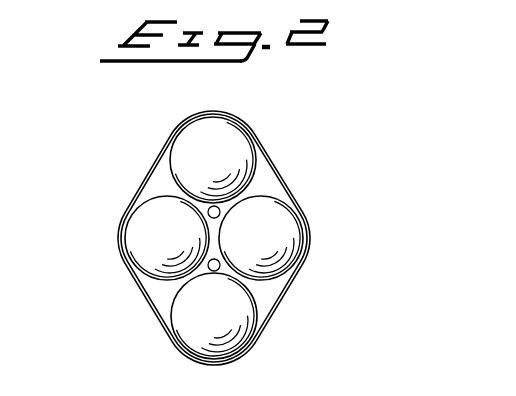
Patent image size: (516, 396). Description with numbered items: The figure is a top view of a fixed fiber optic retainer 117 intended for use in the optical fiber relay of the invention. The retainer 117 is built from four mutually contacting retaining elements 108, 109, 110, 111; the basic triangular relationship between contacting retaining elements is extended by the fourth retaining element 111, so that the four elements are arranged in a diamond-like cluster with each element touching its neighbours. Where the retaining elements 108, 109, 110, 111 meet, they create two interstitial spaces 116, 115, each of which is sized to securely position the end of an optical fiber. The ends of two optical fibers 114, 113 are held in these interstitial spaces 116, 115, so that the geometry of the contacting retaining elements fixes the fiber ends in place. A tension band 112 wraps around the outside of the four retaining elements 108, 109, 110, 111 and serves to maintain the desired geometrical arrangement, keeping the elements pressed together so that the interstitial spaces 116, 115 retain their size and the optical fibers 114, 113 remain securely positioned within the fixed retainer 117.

The retaining element 108 is at (185, 147).
The retaining element 109 is at (146, 243).
The retaining element 110 is at (203, 335).
The retaining element 111 is at (290, 239).
The tension band 112 is at (140, 204).
The optical fiber 113 is at (209, 209).
The optical fiber 114 is at (208, 268).
The interstitial space 115 is at (225, 181).
The interstitial space 116 is at (268, 270).
The fixed fiber optic retainer 117 is at (90, 206).